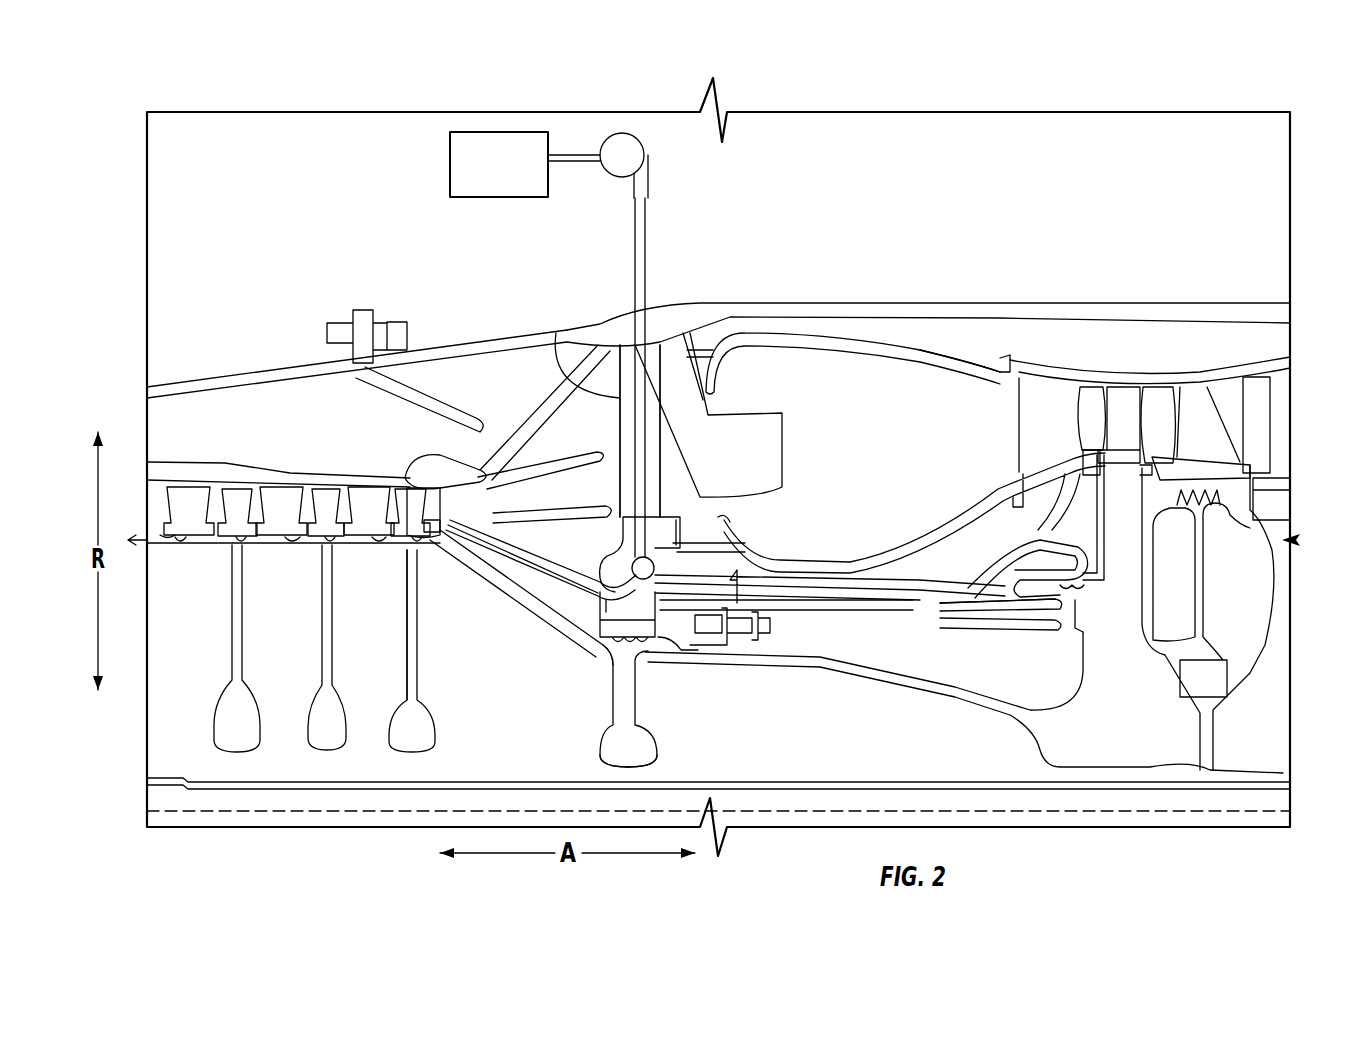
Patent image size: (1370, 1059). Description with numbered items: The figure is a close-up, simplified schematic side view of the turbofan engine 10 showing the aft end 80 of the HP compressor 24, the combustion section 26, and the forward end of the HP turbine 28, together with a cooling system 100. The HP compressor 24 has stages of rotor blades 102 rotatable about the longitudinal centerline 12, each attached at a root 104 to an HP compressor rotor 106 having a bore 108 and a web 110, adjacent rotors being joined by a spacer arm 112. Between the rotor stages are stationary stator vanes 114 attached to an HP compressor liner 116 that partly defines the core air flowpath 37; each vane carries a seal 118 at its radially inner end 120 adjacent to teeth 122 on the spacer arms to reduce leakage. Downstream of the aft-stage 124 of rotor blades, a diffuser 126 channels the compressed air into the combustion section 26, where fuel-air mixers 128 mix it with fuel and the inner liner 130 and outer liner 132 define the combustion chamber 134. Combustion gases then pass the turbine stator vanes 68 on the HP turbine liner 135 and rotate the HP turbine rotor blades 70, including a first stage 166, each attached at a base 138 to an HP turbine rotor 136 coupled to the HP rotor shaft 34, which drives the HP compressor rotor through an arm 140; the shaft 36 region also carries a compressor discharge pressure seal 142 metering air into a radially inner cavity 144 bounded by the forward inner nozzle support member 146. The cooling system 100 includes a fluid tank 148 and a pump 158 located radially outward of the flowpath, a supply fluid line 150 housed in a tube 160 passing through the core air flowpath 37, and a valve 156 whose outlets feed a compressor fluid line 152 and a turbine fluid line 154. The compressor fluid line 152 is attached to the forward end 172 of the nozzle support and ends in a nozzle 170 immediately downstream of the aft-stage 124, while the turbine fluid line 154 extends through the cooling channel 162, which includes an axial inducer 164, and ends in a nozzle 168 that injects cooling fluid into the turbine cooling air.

The turbofan engine 10 is at (258, 82).
The longitudinal centerline 12 is at (1258, 812).
The HP compressor 24 is at (203, 410).
The combustion section 26 is at (855, 360).
The HP turbine 28 is at (1262, 340).
The HP rotor shaft 34 is at (818, 660).
The shaft 36 is at (788, 777).
The core air flowpath 37 is at (259, 494).
The turbine stator vanes 68 is at (1213, 393).
The HP turbine rotor blades 70 is at (1122, 405).
The aft end of the HP compressor 80 is at (403, 452).
The cooling system 100 is at (700, 195).
The rotor blades 102 is at (322, 500).
The root 104 is at (235, 532).
The HP compressor rotors 106 is at (437, 657).
The bore 108 is at (418, 727).
The web 110 is at (410, 615).
The spacer arm 112 is at (297, 542).
The stator vanes 114 is at (282, 497).
The HP compressor liner 116 is at (371, 484).
The seal 118 is at (273, 523).
The radially inner end 120 is at (190, 545).
The teeth 122 is at (373, 523).
The aft-stage of rotor blades 124 is at (440, 420).
The diffuser 126 is at (480, 495).
The fuel-air mixers 128 is at (695, 395).
The inner liner 130 is at (848, 553).
The outer liner 132 is at (965, 345).
The combustion chamber 134 is at (872, 416).
The HP turbine liner 135 is at (1021, 378).
The HP turbine rotor 136 is at (1112, 735).
The base 138 is at (1128, 470).
The arm 140 is at (573, 633).
The compressor discharge pressure seal 142 is at (658, 727).
The radially inner cavity 144 is at (997, 634).
The forward inner nozzle support member 146 is at (1013, 632).
The fluid tank 148 is at (525, 164).
The supply fluid line 150 is at (636, 272).
The compressor fluid line 152 is at (522, 567).
The turbine fluid line 154 is at (857, 580).
The valve 156 is at (655, 566).
The pump 158 is at (640, 152).
The tube 160 is at (600, 400).
The cooling channel 162 is at (893, 573).
The axial inducer 164 is at (1060, 632).
The first stage of HP turbine rotor blades 166 is at (1095, 393).
The nozzle 168 is at (923, 580).
The nozzle 170 is at (428, 523).
The forward end 172 is at (477, 530).